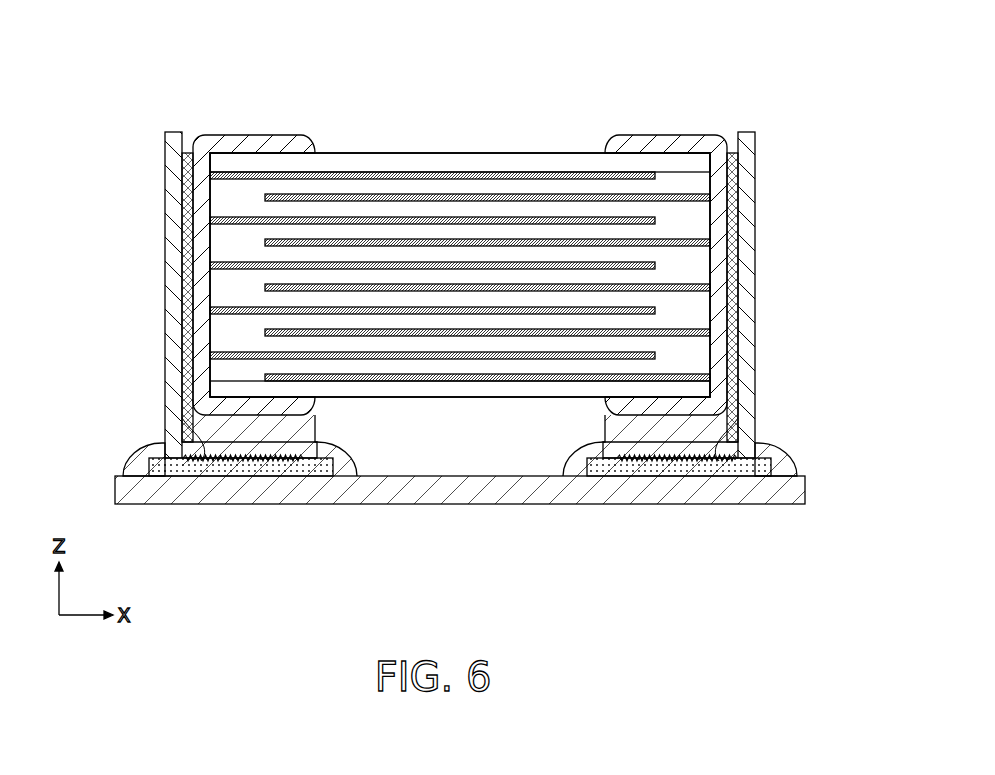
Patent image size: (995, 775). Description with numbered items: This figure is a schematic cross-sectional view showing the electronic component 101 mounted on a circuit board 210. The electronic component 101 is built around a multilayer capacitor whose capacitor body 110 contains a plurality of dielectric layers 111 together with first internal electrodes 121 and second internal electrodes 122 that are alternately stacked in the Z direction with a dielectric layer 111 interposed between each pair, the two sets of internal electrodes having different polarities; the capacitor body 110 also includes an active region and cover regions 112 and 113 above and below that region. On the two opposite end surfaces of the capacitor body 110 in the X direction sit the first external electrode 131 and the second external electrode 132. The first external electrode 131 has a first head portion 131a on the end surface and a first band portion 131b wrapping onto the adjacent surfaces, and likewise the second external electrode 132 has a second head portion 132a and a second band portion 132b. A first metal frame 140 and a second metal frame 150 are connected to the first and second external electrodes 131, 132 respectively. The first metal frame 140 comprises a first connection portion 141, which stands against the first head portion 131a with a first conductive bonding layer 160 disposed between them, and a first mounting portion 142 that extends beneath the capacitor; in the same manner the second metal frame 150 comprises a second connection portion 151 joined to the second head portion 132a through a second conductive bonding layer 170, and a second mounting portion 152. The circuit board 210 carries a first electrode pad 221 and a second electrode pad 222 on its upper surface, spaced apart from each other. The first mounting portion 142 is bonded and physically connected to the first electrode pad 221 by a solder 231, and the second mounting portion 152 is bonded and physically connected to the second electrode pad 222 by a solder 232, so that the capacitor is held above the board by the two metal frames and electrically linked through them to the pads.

The electronic component 101 is at (483, 138).
The capacitor body 110 is at (450, 151).
The dielectric layer 111 is at (515, 210).
The cover region 112 is at (570, 163).
The cover region 113 is at (492, 387).
The first internal electrode 121 is at (397, 173).
The second internal electrode 122 is at (342, 196).
The first external electrode 131 is at (78, 108).
The first head portion 131a is at (198, 179).
The first band portion 131b is at (237, 143).
The second external electrode 132 is at (842, 108).
The second head portion 132a is at (722, 179).
The second band portion 132b is at (683, 143).
The first metal frame 140 is at (155, 556).
The first connection portion 141 is at (192, 466).
The first mounting portion 142 is at (240, 462).
The second metal frame 150 is at (660, 556).
The second connection portion 151 is at (728, 466).
The second mounting portion 152 is at (681, 462).
The first conductive bonding layer 160 is at (188, 247).
The second conductive bonding layer 170 is at (735, 272).
The circuit board 210 is at (462, 490).
The first electrode pad 221 is at (291, 450).
The second electrode pad 222 is at (629, 450).
The solder 231 is at (346, 467).
The solder 232 is at (574, 467).